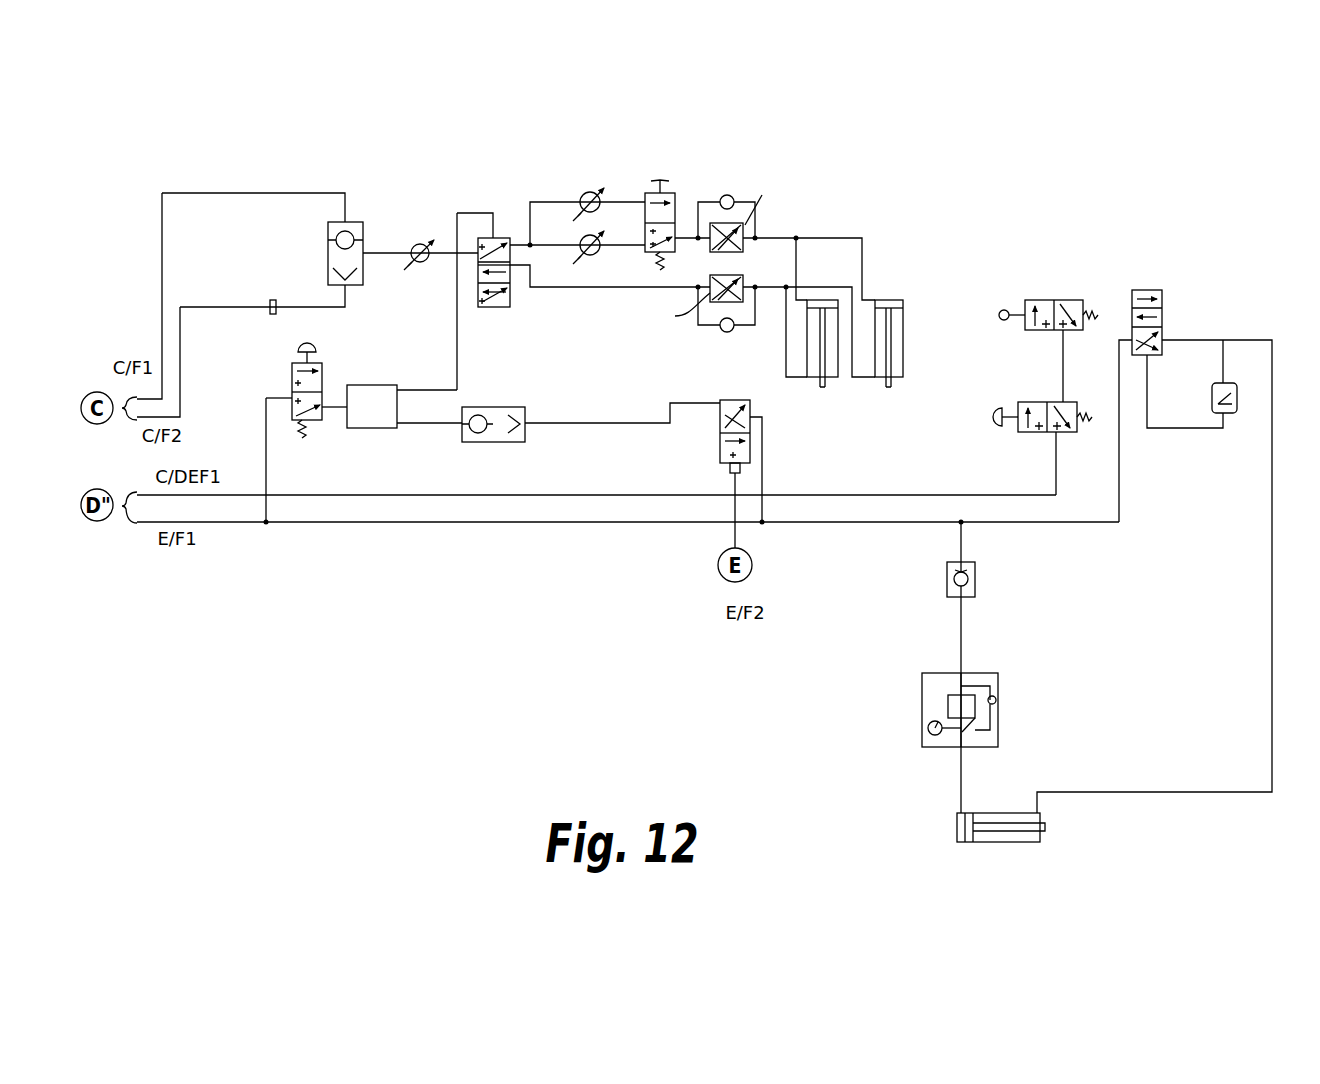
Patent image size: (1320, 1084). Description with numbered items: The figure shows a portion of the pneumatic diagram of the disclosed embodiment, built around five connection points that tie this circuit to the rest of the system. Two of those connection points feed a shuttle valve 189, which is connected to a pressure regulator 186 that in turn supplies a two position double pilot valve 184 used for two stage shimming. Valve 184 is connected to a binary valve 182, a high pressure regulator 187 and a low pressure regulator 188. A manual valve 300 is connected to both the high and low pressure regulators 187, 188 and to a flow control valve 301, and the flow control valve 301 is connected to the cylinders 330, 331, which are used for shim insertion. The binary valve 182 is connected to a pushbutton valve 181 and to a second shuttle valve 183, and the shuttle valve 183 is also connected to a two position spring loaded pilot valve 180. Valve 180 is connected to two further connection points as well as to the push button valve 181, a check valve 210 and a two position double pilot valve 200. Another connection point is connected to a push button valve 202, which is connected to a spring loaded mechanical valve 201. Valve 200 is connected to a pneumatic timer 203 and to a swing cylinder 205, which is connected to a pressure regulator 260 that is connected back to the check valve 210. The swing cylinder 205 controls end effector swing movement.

The two position spring loaded pilot valve 180 is at (750, 404).
The pushbutton valve 181 is at (318, 422).
The binary valve 182 is at (372, 428).
The shuttle valve 183 is at (484, 442).
The two position double pilot valve 184 is at (500, 238).
The pressure regulator 186 is at (416, 262).
The high pressure regulator 187 is at (583, 194).
The low pressure regulator 188 is at (586, 256).
The shuttle valve 189 is at (334, 222).
The two position double pilot valve 200 is at (1146, 290).
The spring loaded mechanical valve 201 is at (1025, 302).
The push button valve 202 is at (1040, 402).
The pneumatic timer 203 is at (1212, 395).
The swing cylinder 205 is at (957, 830).
The check valve 210 is at (947, 581).
The pressure regulator 260 is at (922, 703).
The manual valve 300 is at (658, 182).
The flow control valve 301 is at (726, 195).
The cylinder 330 is at (822, 300).
The cylinder 331 is at (891, 300).